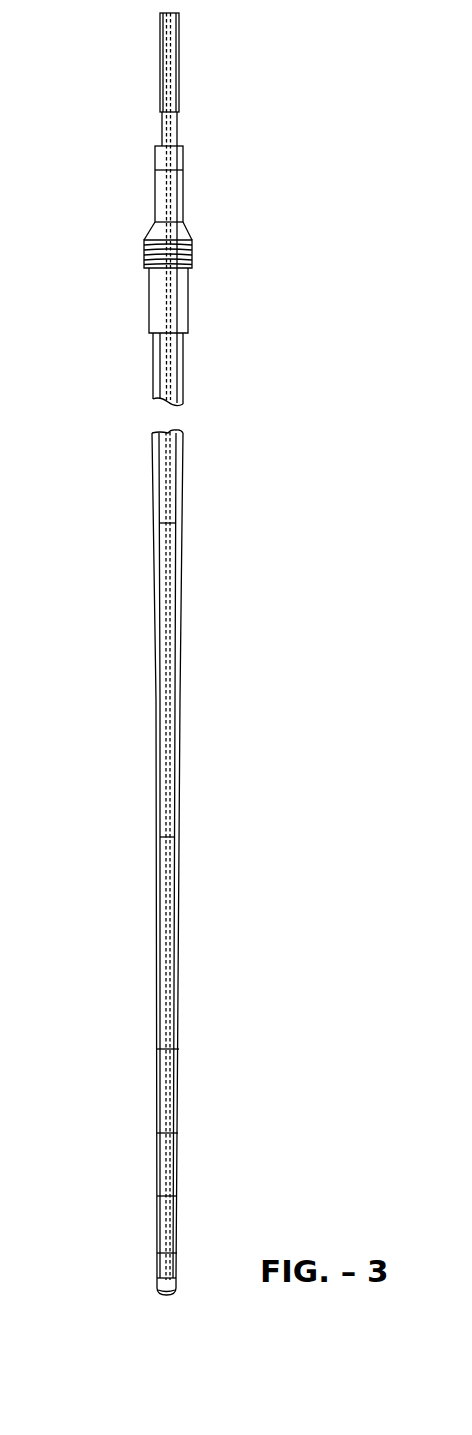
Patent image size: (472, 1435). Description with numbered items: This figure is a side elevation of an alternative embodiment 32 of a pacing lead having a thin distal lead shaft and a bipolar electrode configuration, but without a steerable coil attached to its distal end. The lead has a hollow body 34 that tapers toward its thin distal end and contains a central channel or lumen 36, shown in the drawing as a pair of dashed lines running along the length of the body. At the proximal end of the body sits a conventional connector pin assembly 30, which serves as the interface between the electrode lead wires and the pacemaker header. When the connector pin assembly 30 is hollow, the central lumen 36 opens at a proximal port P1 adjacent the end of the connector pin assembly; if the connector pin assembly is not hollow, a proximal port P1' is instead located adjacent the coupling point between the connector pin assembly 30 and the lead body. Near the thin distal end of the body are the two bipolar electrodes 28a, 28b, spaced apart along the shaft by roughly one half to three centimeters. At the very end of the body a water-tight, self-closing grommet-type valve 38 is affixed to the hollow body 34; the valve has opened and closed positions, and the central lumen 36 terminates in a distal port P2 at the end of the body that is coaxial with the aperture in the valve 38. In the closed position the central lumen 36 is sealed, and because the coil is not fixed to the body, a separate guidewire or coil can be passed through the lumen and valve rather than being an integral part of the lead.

The proximal port P1 is at (228, 206).
The connector pin assembly 30 is at (173, 295).
The proximal port P1' is at (226, 369).
The alternative embodiment 32 is at (204, 878).
The hollow body 34 is at (176, 728).
The central lumen 36 is at (168, 690).
The bipolar electrode 28a is at (185, 1050).
The bipolar electrode 28b is at (185, 1196).
The grommet-type valve 38 is at (176, 1294).
The distal port P2 is at (143, 1297).